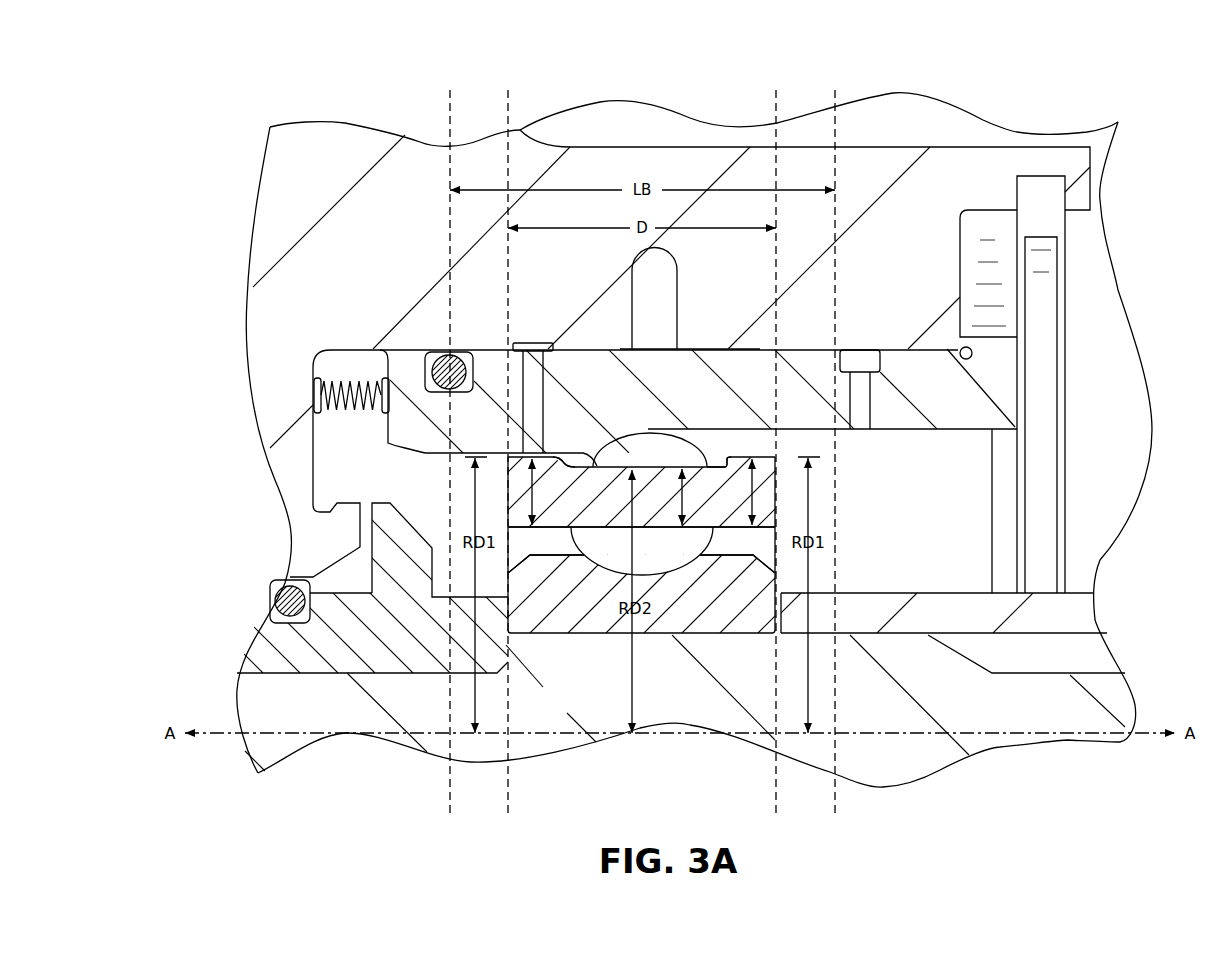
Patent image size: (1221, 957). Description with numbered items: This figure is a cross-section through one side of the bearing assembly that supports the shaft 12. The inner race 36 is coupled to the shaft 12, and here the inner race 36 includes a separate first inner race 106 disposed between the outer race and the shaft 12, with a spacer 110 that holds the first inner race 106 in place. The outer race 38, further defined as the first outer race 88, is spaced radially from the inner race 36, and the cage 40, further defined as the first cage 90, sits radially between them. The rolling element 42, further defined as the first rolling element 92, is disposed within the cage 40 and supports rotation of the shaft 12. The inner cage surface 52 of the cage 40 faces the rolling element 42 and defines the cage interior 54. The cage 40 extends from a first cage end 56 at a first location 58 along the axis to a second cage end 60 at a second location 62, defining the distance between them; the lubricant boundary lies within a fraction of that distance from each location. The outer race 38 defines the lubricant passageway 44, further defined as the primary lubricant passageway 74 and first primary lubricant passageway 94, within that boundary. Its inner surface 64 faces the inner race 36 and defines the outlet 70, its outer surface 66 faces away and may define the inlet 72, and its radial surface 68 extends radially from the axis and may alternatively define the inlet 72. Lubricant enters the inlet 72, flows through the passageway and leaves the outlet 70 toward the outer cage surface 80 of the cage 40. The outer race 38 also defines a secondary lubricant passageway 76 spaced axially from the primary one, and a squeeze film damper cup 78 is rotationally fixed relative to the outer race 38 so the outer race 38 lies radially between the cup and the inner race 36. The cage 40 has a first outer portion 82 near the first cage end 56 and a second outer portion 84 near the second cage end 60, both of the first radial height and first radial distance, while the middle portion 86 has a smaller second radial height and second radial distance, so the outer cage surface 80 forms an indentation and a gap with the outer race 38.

The shaft 12 is at (1063, 713).
The inner race 36 is at (609, 660).
The outer race 38 is at (625, 316).
The cage 40 is at (574, 618).
The rolling element 42 is at (707, 653).
The lubricant passageway 44 is at (580, 402).
The inner cage surface 52 is at (725, 440).
The cage interior 54 is at (710, 461).
The first cage end 56 is at (507, 483).
The first location 58 is at (503, 112).
The second cage end 60 is at (780, 503).
The second location 62 is at (778, 110).
The inner surface 64 is at (572, 456).
The outer surface 66 is at (500, 345).
The radial surface 68 is at (387, 372).
The outlet 70 is at (552, 402).
The inlet 72 is at (531, 340).
The primary lubricant passageway 74 is at (580, 402).
The secondary lubricant passageway 76 is at (860, 403).
The squeeze film damper cup 78 is at (683, 352).
The outer cage surface 80 is at (613, 448).
The first outer portion 82 is at (521, 533).
The second outer portion 84 is at (767, 528).
The middle portion 86 is at (602, 563).
The first outer race 88 is at (662, 392).
The first cage 90 is at (562, 528).
The first rolling element 92 is at (668, 563).
The first primary lubricant passageway 94 is at (532, 402).
The first inner race 106 is at (592, 750).
The spacer 110 is at (963, 617).